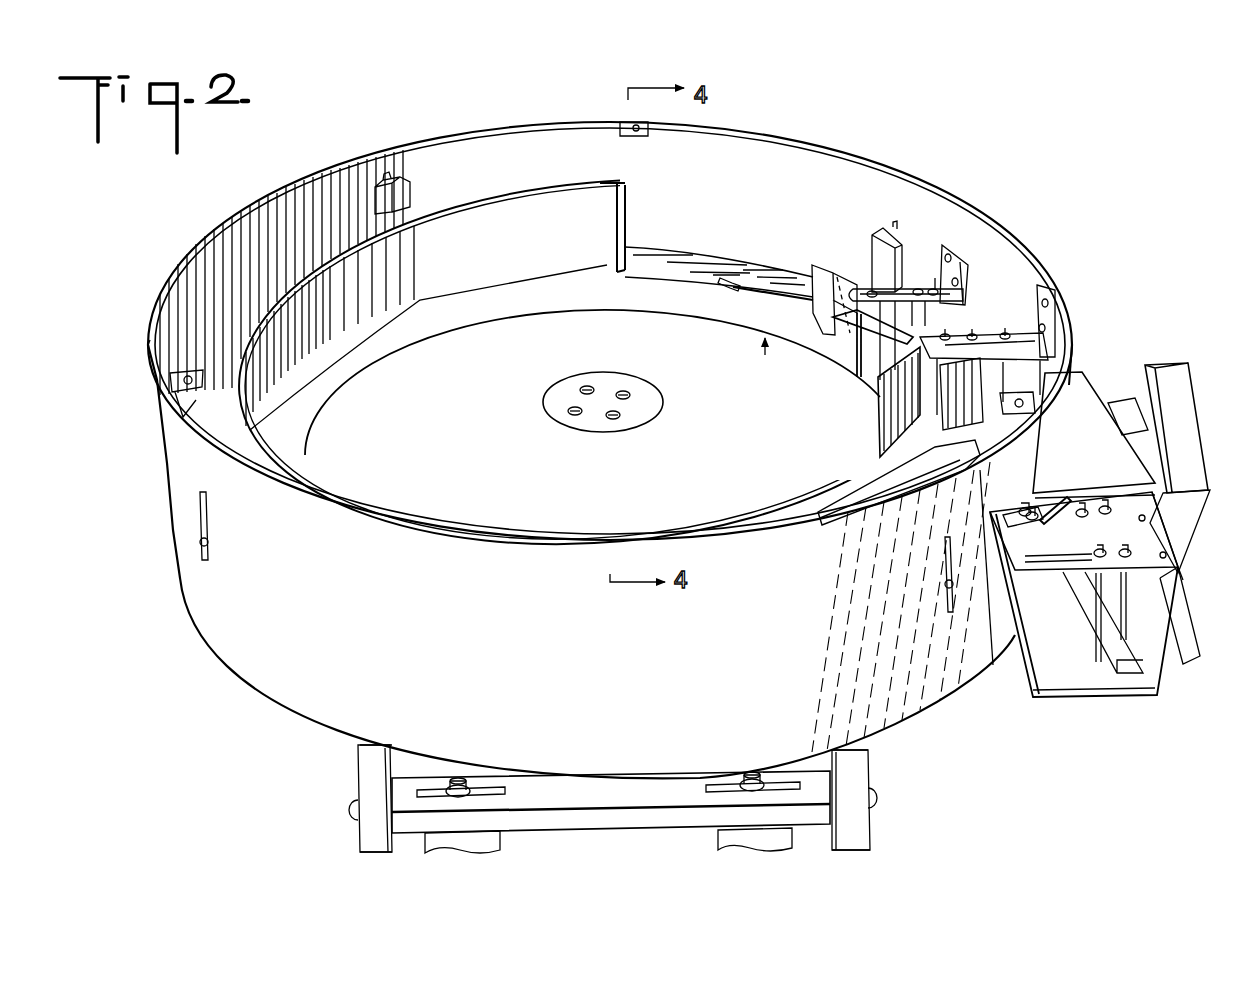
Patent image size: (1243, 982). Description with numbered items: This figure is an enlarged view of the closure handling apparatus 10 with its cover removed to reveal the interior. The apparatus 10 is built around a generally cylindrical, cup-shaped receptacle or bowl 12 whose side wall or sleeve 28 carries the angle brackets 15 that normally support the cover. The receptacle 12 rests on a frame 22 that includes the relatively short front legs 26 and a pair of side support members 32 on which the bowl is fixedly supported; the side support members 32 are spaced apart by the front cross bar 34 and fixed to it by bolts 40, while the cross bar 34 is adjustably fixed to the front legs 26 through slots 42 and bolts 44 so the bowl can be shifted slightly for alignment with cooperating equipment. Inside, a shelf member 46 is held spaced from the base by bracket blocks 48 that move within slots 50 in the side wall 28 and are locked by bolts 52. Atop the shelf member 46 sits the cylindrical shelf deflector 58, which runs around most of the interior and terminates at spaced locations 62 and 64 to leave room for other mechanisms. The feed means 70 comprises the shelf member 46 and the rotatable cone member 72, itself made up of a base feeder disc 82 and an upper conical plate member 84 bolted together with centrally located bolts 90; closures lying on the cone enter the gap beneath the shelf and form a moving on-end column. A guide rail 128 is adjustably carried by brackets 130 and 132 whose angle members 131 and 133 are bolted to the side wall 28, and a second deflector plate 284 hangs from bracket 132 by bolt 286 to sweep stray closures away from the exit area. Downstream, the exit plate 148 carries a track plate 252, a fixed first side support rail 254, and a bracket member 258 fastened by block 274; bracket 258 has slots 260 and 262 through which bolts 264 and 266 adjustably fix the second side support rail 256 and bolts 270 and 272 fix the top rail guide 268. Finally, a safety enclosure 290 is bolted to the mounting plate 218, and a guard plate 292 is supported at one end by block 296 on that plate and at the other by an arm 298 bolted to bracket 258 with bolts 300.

The closure handling apparatus 10 is at (1010, 194).
The receptacle or bowl 12 is at (145, 412).
The angle brackets 15 is at (646, 133).
The frame 22 is at (340, 784).
The front legs 26 is at (480, 840).
The side wall or sleeve 28 is at (150, 291).
The side support members 32 is at (365, 757).
The front cross bar 34 is at (596, 815).
The bolts 40 is at (350, 810).
The slots 42 is at (490, 790).
The bolts 44 is at (458, 780).
The shelf member 46 is at (720, 280).
The bracket blocks 48 is at (405, 192).
The slots 50 is at (200, 520).
The bolts 52 is at (200, 543).
The shelf deflector or sleeve 58 is at (272, 272).
The end location of shelf deflector 62 is at (628, 187).
The end location of shelf deflector 64 is at (988, 446).
The feed means 70 is at (748, 360).
The rotatable cone member 72 is at (712, 435).
The base feeder disc 82 is at (742, 320).
The upper conical plate member 84 is at (600, 485).
The bolts 90 is at (623, 392).
The guide rail 128 is at (880, 328).
The bracket 130 is at (886, 287).
The angle member 131 is at (960, 253).
The bracket 132 is at (864, 360).
The angle member 133 is at (1040, 289).
The exit plate 148 is at (1187, 628).
The mounting plate 218 is at (1172, 505).
The track plate 252 is at (1040, 675).
The first side support rail 254 is at (1167, 663).
The second side support rail 256 is at (1127, 665).
The bracket member 258 is at (1006, 530).
The slot 260 is at (1040, 512).
The slot 262 is at (1035, 562).
The bolt 264 is at (1086, 508).
The bolt 266 is at (1094, 551).
The top rail guide 268 is at (1147, 678).
The bolt 270 is at (1110, 503).
The bolt 272 is at (1124, 541).
The block 274 is at (1178, 585).
The second deflector plate 284 is at (880, 430).
The bolt 286 is at (950, 335).
The safety enclosure 290 is at (1180, 373).
The guard plate 292 is at (1084, 370).
The block 296 is at (1114, 400).
The arm 298 is at (1015, 500).
The bolts 300 is at (1018, 511).